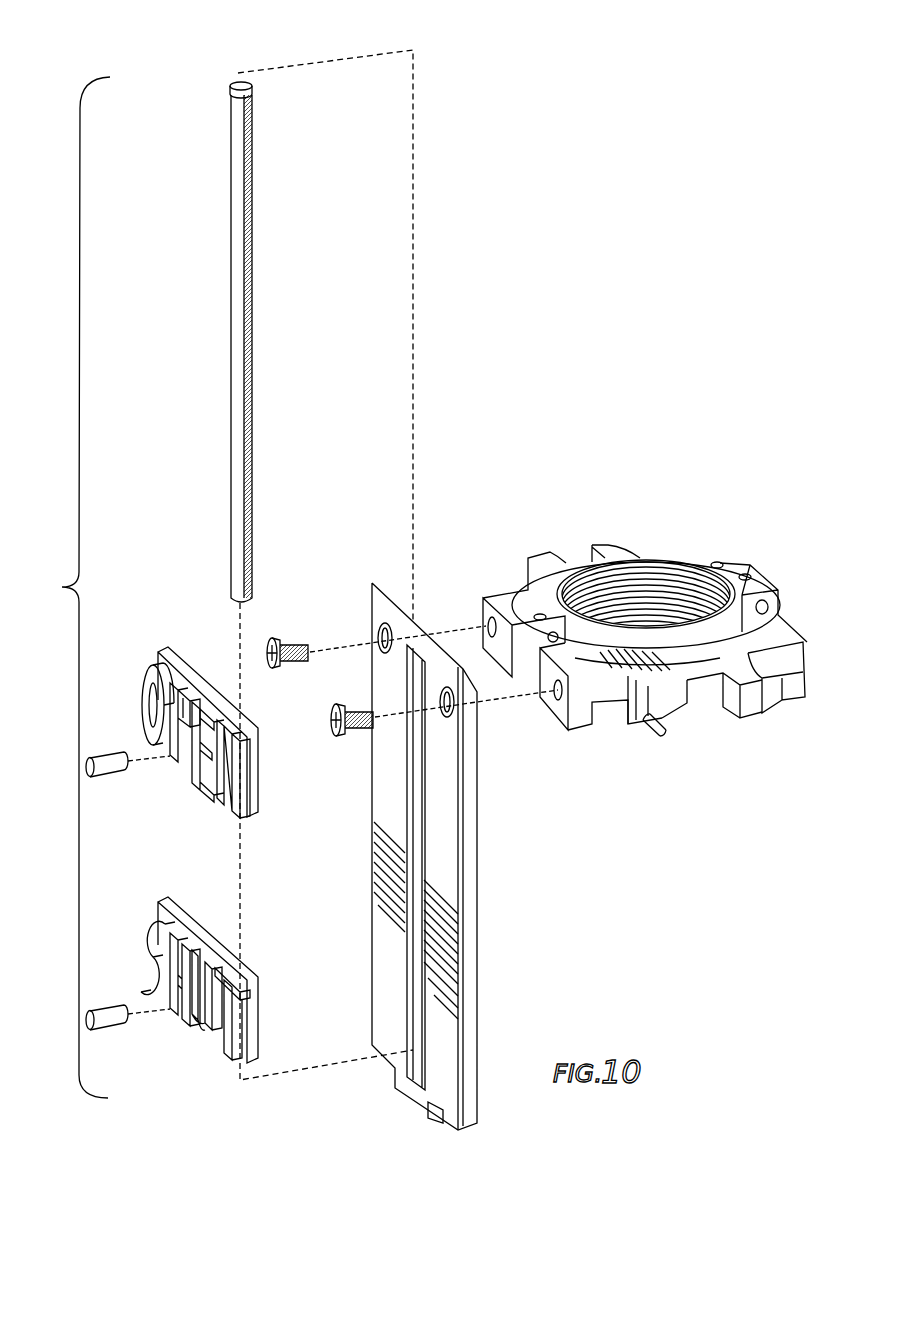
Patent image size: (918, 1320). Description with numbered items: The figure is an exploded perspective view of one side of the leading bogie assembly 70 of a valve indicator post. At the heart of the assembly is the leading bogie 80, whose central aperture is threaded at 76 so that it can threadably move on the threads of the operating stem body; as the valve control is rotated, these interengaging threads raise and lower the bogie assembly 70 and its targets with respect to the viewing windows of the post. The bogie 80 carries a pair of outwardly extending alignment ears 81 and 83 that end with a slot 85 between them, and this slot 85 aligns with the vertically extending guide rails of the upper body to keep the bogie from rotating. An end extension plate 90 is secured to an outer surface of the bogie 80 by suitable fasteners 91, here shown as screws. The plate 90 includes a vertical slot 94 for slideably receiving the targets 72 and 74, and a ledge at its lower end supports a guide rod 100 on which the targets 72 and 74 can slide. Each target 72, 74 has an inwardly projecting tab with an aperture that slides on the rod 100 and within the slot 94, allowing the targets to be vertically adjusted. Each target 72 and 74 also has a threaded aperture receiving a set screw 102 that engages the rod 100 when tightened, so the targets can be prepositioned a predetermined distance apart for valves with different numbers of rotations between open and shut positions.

The leading bogie assembly 70 is at (70, 587).
The target 72 is at (177, 657).
The target 74 is at (257, 1010).
The threads 76 is at (683, 565).
The leading bogie 80 is at (654, 615).
The alignment ear 81 is at (752, 706).
The alignment ear 83 is at (612, 543).
The slot 85 is at (580, 560).
The end extension plate 90 is at (493, 856).
The fasteners 91 is at (337, 703).
The vertical slot 94 is at (417, 898).
The guide rod 100 is at (243, 270).
The set screw 102 is at (108, 768).